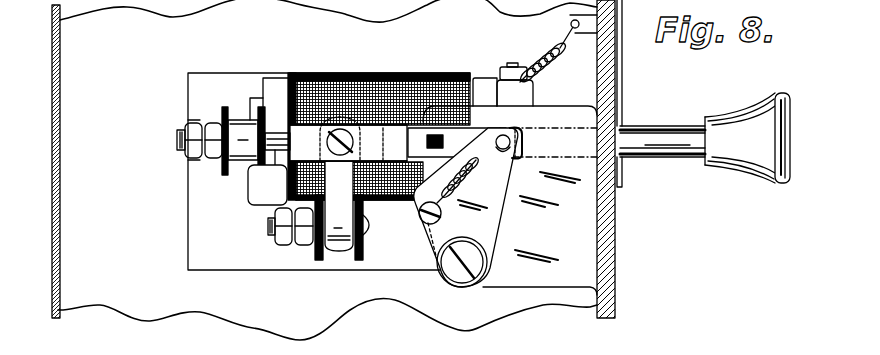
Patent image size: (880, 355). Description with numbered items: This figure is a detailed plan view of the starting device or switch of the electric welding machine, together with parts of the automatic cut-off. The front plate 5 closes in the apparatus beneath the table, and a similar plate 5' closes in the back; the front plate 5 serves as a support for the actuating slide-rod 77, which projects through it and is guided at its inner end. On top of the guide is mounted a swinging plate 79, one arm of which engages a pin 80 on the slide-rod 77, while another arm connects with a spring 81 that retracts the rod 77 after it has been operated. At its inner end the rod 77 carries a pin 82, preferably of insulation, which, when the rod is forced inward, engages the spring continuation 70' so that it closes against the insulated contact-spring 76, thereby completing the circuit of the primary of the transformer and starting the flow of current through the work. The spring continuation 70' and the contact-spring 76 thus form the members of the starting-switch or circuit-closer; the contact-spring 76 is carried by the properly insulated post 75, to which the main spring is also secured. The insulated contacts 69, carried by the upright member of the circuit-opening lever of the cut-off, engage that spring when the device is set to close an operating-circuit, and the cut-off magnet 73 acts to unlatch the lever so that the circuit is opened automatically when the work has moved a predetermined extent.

The front plate 5 is at (618, 159).
The back plate 5' is at (69, 161).
The insulated contacts 69 is at (233, 141).
The continuation of spring 70' is at (348, 98).
The cut-off magnet 73 is at (391, 74).
The post 75 is at (318, 211).
The insulated contact-spring 76 is at (327, 139).
The actuating slide-rod 77 is at (656, 128).
The swinging plate 79 is at (500, 208).
The pin 80 is at (504, 136).
The spring 81 is at (540, 56).
The pin of insulation 82 is at (432, 134).